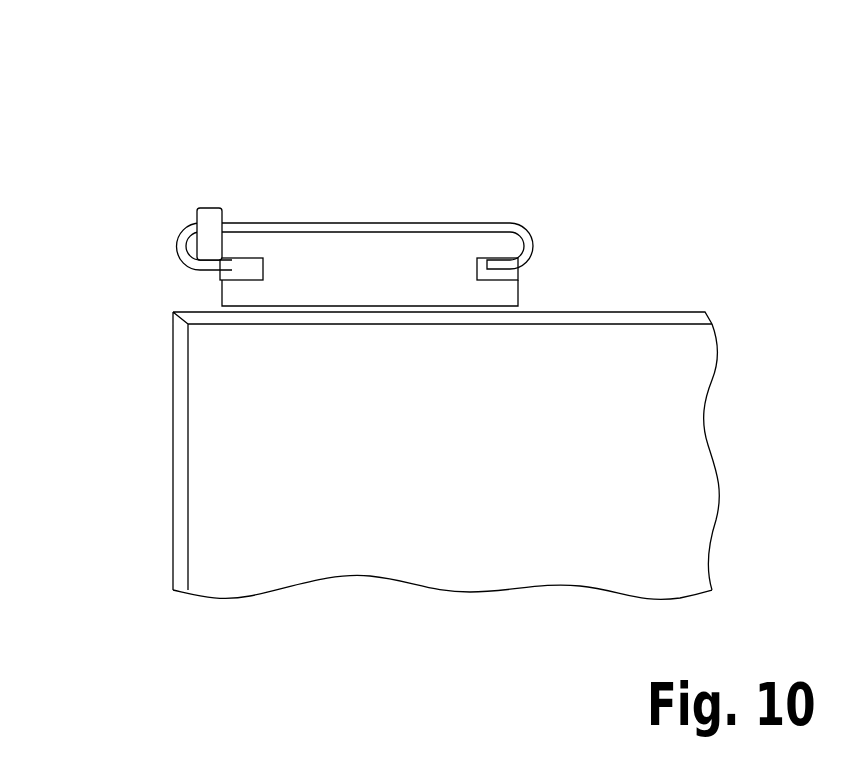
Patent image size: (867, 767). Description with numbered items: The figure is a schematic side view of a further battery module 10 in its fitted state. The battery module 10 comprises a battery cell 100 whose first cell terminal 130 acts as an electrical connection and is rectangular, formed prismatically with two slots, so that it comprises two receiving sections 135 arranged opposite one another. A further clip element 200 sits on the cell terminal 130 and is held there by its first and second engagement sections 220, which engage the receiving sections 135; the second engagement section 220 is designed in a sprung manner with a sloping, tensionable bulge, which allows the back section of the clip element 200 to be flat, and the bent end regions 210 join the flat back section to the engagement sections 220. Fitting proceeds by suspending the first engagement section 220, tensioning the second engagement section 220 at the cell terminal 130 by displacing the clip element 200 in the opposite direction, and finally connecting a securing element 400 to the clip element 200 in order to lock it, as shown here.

The battery module 10 is at (415, 82).
The battery cell 100 is at (258, 573).
The cell terminal 130 is at (426, 278).
The receiving section 135 is at (512, 112).
The clip element 200 is at (358, 127).
The bent loop of clip 210 is at (530, 238).
The engagement section 220 is at (530, 259).
The securing element 400 is at (203, 210).